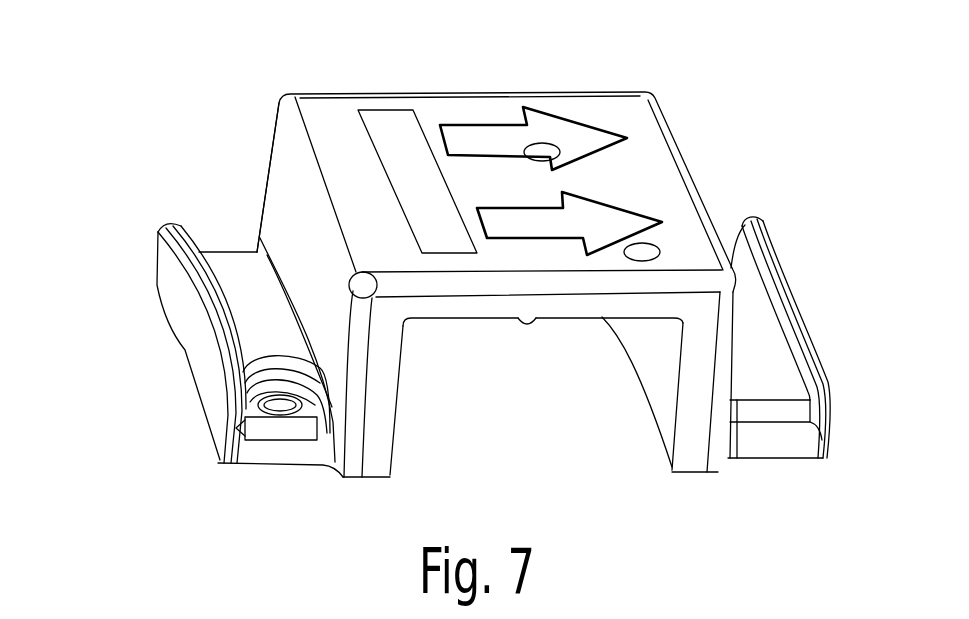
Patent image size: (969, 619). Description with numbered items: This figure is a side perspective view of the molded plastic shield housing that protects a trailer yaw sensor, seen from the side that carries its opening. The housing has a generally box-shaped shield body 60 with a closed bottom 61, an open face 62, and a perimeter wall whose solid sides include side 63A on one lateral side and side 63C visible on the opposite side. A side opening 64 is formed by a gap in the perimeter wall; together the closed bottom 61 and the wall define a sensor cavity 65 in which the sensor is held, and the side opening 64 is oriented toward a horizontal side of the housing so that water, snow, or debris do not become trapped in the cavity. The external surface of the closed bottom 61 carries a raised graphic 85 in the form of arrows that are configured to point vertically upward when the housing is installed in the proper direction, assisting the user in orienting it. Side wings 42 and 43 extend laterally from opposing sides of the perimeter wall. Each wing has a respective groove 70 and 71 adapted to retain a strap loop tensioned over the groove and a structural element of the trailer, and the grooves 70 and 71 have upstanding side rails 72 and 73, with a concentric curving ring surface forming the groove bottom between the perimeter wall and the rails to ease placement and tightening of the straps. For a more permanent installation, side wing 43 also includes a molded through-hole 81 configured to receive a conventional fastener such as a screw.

The shield body 60 is at (276, 96).
The closed bottom 61 is at (488, 183).
The raised graphic 85 is at (575, 132).
The solid side 63A is at (283, 198).
The solid side 63C is at (670, 374).
The side opening 64 is at (437, 383).
The sensor cavity 65 is at (493, 328).
The open face 62 is at (575, 438).
The groove 70 is at (753, 303).
The groove 71 is at (250, 310).
The side rail 72 is at (815, 328).
The side rail 73 is at (232, 358).
The side wing 42 is at (797, 464).
The side wing 43 is at (267, 476).
The through-hole 81 is at (282, 407).